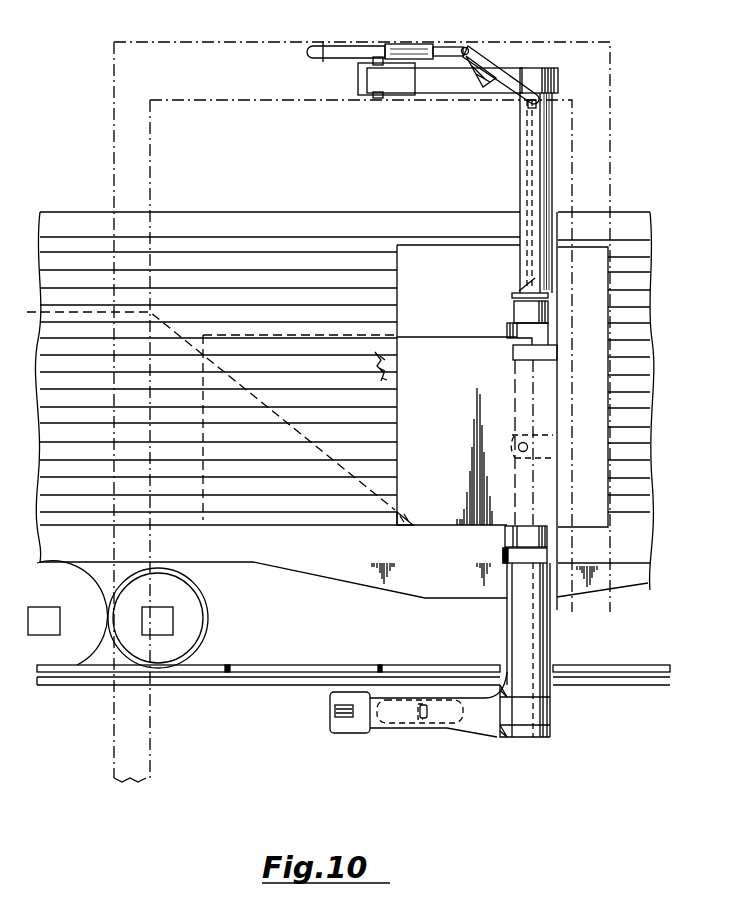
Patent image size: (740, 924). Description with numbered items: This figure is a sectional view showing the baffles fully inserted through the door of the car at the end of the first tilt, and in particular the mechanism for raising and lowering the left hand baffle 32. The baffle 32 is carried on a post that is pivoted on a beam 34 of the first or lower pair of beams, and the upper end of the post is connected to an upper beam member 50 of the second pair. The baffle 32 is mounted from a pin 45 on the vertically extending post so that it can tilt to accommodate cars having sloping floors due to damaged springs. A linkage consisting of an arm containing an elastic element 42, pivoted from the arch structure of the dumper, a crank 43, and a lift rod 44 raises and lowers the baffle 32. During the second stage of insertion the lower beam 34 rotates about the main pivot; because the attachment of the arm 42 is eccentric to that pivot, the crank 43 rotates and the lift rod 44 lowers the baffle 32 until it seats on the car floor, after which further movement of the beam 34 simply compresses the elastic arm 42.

The left hand baffle 32 is at (432, 411).
The beam 34 is at (463, 723).
The arm containing an elastic element 42 is at (409, 46).
The crank 43 is at (492, 66).
The lift rod 44 is at (531, 129).
The pin 45 is at (519, 443).
The upper beam member 50 is at (448, 84).